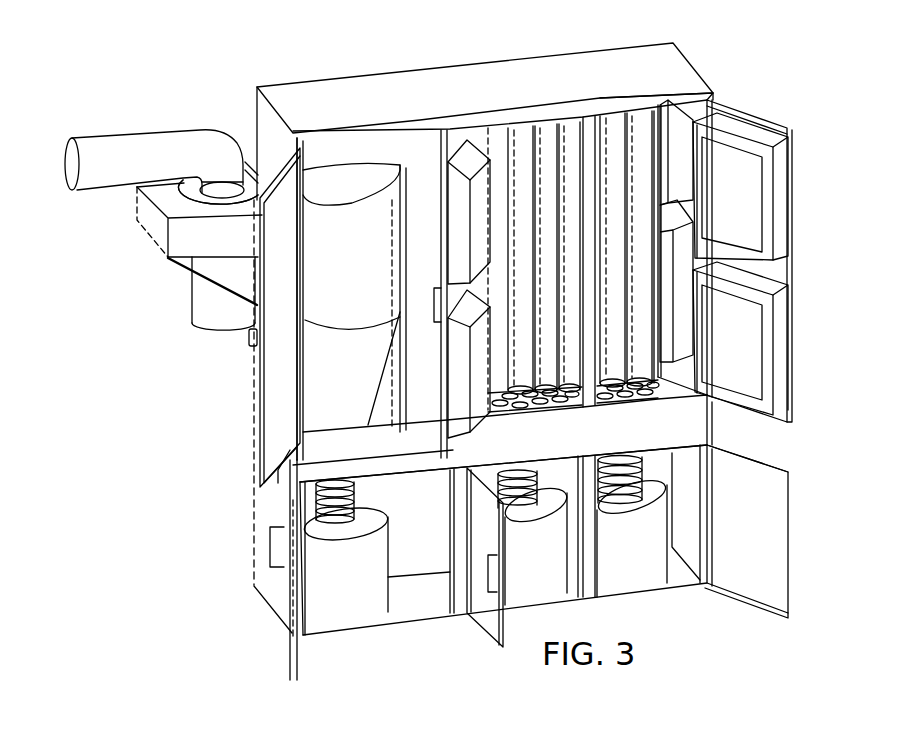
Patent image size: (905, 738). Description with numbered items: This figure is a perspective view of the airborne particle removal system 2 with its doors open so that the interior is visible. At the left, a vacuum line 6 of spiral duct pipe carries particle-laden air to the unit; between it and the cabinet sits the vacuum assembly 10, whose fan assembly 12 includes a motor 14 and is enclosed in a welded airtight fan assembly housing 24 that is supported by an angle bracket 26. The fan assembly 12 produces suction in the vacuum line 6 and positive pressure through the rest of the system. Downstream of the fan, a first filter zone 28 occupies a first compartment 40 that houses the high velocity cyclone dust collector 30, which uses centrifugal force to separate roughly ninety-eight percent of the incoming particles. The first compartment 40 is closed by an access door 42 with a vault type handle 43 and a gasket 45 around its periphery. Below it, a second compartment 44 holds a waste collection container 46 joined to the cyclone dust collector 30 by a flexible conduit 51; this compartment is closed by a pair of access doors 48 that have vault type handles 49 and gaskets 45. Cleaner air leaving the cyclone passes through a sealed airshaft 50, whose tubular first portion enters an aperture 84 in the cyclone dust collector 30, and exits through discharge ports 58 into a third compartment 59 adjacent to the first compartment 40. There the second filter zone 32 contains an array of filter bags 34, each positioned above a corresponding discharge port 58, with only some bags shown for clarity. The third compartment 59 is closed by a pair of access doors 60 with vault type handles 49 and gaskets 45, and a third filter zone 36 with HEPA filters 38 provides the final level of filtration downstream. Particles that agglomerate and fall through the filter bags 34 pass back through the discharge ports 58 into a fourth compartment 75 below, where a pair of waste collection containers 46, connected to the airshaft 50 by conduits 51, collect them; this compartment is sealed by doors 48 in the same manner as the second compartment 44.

The airborne particle removal system 2 is at (190, 425).
The vacuum line 6 is at (105, 182).
The vacuum assembly 10 is at (160, 345).
The fan assembly 12 is at (168, 255).
The motor 14 is at (213, 310).
The fan assembly housing 24 is at (222, 247).
The angle bracket 26 is at (183, 267).
The first filter zone 28 is at (403, 120).
The high velocity cyclone dust collector 30 is at (360, 274).
The second filter zone 32 is at (590, 86).
The filter bags 34 is at (620, 122).
The third filter zone 36 is at (740, 134).
The HEPA filters 38 is at (753, 212).
The first compartment 40 is at (317, 163).
The access door 42 is at (273, 415).
The vault type handle 43 is at (250, 350).
The second compartment 44 is at (447, 550).
The gasket 45 is at (788, 355).
The waste collection container 46 is at (363, 581).
The access doors 48 is at (769, 544).
The vault type handle 49 is at (433, 303).
The sealed airshaft 50 is at (420, 357).
The conduit 51 is at (355, 495).
The discharge ports 58 is at (625, 385).
The third compartment 59 is at (520, 140).
The access doors 60 is at (440, 402).
The fourth compartment 75 is at (680, 473).
The aperture 84 is at (340, 172).